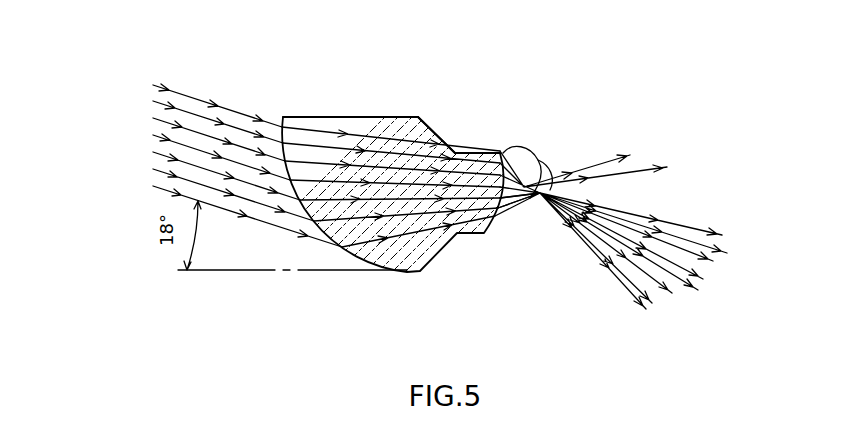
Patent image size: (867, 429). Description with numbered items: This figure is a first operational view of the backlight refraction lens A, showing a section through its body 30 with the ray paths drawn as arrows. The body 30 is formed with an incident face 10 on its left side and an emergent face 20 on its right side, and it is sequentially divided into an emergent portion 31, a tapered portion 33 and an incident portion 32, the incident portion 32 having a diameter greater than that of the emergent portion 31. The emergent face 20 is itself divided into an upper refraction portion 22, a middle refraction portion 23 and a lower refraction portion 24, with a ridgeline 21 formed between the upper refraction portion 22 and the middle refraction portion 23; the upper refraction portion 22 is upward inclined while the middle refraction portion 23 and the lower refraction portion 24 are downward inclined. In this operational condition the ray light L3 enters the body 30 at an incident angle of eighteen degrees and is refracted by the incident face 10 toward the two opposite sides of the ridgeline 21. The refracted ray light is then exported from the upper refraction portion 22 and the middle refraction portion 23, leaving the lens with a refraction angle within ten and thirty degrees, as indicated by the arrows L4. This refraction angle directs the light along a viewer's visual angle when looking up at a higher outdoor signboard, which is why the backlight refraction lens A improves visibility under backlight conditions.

The incident face 10 is at (300, 202).
The emergent face 20 is at (518, 243).
The ridgeline 21 is at (522, 208).
The upper refraction portion 22 is at (547, 207).
The middle refraction portion 23 is at (507, 210).
The lower refraction portion 24 is at (492, 203).
The body 30 is at (391, 90).
The emergent portion 31 is at (482, 153).
The incident portion 32 is at (387, 117).
The tapered portion 33 is at (438, 131).
The ray light L3 is at (238, 127).
The refracted ray light arrows L4 is at (688, 296).
The backlight refraction lens A is at (524, 99).